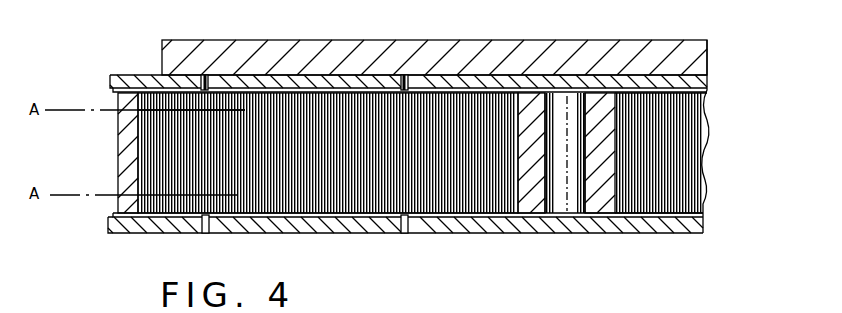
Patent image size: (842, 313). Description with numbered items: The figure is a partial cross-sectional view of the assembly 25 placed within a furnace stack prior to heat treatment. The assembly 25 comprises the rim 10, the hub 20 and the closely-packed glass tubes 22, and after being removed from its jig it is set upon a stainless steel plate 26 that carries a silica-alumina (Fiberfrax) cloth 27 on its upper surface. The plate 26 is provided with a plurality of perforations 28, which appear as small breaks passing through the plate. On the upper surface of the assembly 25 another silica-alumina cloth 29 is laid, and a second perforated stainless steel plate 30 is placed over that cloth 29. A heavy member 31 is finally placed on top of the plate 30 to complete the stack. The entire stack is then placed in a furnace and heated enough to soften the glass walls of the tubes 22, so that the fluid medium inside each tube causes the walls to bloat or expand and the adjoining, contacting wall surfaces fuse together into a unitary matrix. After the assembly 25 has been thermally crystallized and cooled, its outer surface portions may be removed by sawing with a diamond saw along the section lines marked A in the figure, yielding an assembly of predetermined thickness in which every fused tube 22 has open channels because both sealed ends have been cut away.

The rim 10 is at (118, 146).
The hub 20 is at (530, 195).
The glass tubes 22 is at (307, 183).
The assembly 25 is at (745, 158).
The stainless steel plate 26 is at (275, 233).
The silica-alumina cloth 27 is at (364, 219).
The perforations 28 is at (206, 233).
The silica-alumina cloth 29 is at (114, 92).
The perforated stainless steel plate 30 is at (138, 78).
The heavy member 31 is at (189, 48).